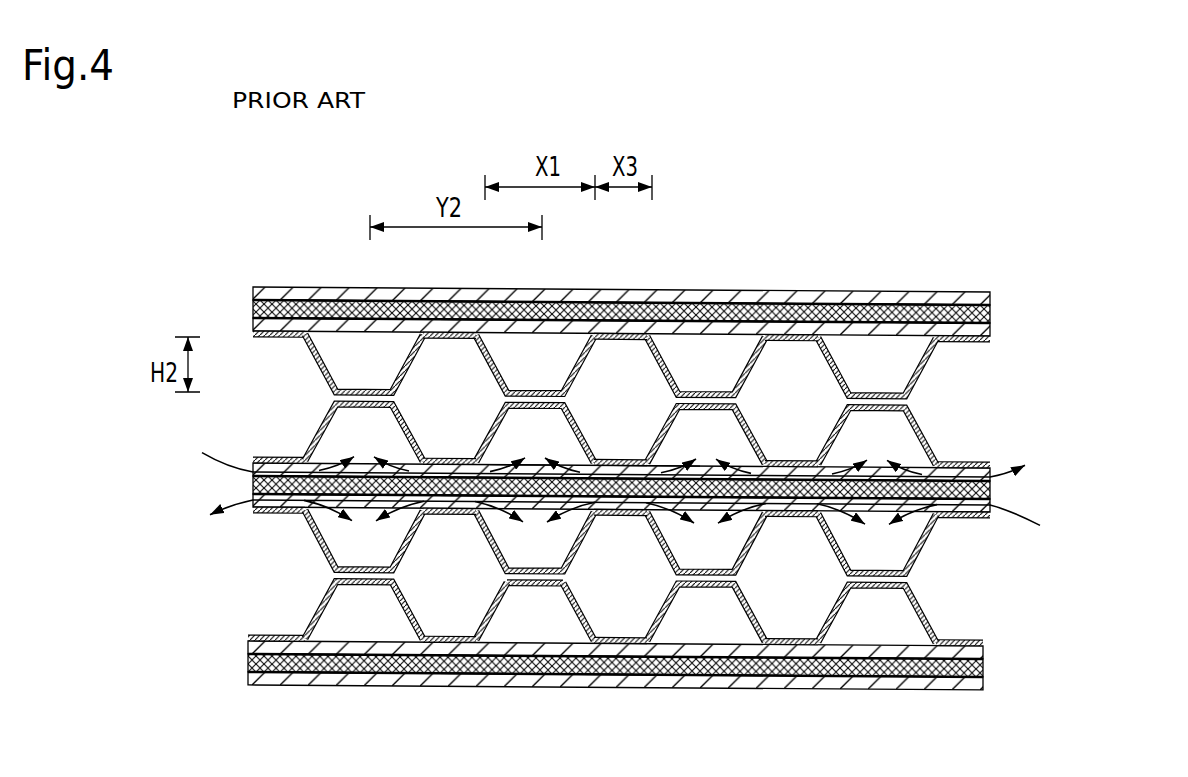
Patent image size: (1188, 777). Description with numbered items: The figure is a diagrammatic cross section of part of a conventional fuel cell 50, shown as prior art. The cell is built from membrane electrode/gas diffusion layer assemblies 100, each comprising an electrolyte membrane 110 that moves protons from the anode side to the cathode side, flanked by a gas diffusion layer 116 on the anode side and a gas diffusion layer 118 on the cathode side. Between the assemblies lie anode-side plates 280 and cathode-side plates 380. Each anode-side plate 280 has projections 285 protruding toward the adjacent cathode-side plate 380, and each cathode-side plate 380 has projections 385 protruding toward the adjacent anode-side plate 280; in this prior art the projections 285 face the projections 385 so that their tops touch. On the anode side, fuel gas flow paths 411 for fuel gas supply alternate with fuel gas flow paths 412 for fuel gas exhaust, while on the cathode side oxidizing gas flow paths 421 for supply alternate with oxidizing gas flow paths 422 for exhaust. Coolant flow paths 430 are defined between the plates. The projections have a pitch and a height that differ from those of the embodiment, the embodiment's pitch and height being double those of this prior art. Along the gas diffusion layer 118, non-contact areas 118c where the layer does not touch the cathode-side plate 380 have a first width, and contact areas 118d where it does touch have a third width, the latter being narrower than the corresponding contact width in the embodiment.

The conventional fuel cell 50 is at (1003, 238).
The membrane electrode/gas diffusion layer assembly 100 is at (1105, 245).
The electrolyte membrane 110 is at (992, 309).
The gas diffusion layer 116 is at (992, 324).
The gas diffusion layer 118 is at (992, 296).
The non-contact area 118c is at (520, 472).
The contact area 118d is at (640, 462).
The anode-side plate 280 is at (977, 342).
The projection 285 is at (558, 590).
The cathode-side plate 380 is at (977, 463).
The projection 385 is at (507, 590).
The fuel gas flow path 411 is at (384, 386).
The fuel gas flow path 412 is at (555, 386).
The oxidizing gas flow path 421 is at (555, 434).
The oxidizing gas flow path 422 is at (384, 434).
The coolant flow path 430 is at (301, 433).